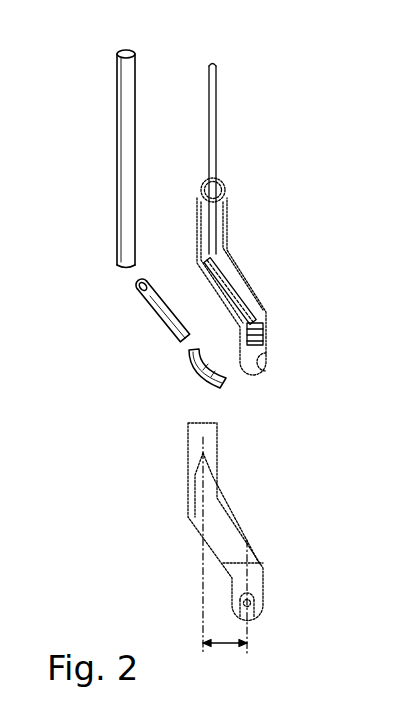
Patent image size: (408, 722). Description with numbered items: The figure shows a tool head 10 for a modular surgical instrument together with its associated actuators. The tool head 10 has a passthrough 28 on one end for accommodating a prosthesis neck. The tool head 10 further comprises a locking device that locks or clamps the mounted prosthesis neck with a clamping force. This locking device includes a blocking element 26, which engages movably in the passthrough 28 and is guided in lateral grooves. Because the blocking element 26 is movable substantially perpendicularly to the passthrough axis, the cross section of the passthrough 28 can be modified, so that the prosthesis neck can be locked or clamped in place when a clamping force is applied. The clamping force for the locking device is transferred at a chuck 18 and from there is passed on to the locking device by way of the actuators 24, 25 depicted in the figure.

The tool head 10 is at (213, 519).
The chuck 18 is at (218, 183).
The actuator 24 is at (210, 93).
The actuator 25 is at (157, 303).
The blocking element 26 is at (193, 370).
The passthrough 28 is at (255, 358).